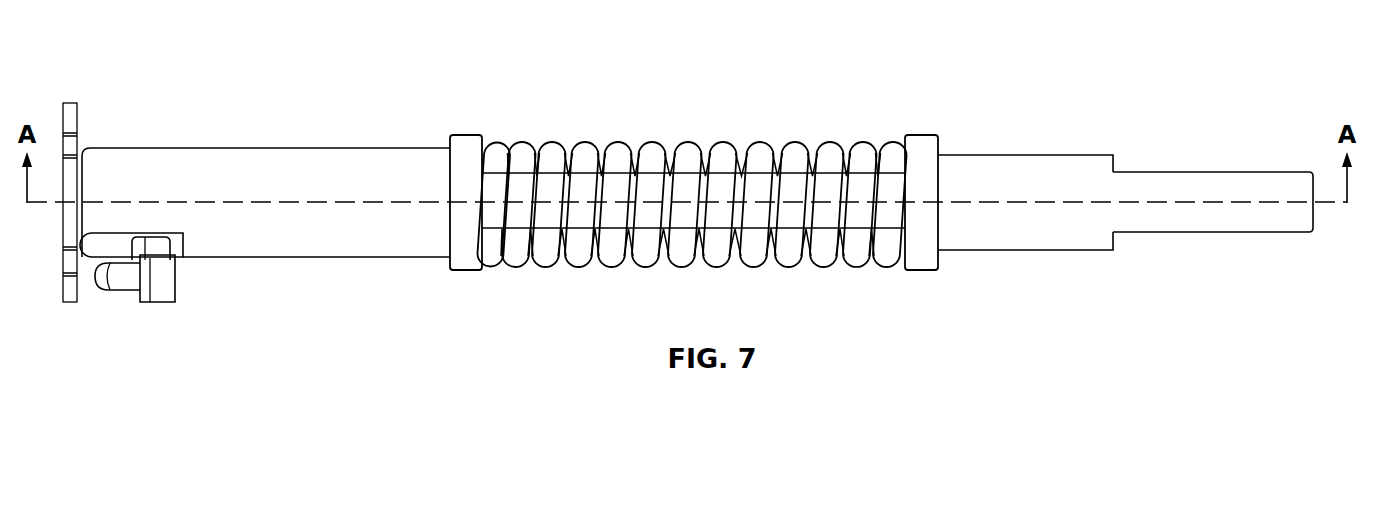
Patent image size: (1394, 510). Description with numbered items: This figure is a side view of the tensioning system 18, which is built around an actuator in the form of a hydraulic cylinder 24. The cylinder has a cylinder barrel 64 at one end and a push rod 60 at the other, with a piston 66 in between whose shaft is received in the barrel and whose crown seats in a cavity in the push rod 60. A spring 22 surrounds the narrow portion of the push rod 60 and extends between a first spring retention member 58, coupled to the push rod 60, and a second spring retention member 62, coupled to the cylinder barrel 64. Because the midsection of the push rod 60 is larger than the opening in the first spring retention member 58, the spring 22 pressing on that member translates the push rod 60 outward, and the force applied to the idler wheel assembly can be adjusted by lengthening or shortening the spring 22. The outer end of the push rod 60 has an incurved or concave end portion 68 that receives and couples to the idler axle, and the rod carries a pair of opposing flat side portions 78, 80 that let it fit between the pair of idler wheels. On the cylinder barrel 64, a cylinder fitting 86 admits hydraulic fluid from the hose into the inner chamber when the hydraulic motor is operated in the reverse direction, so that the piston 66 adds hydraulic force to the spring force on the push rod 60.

The tensioning system 18 is at (573, 82).
The spring 22 is at (688, 158).
The hydraulic cylinder 24 is at (358, 259).
The first spring retention member 58 is at (917, 148).
The push rod 60 is at (1027, 170).
The second spring retention member 62 is at (470, 155).
The cylinder barrel 64 is at (188, 160).
The piston 66 is at (623, 230).
The concave end portion 68 is at (1315, 215).
The flat side portion 78 is at (1208, 233).
The flat side portion 80 is at (1208, 172).
The cylinder fitting 86 is at (150, 300).